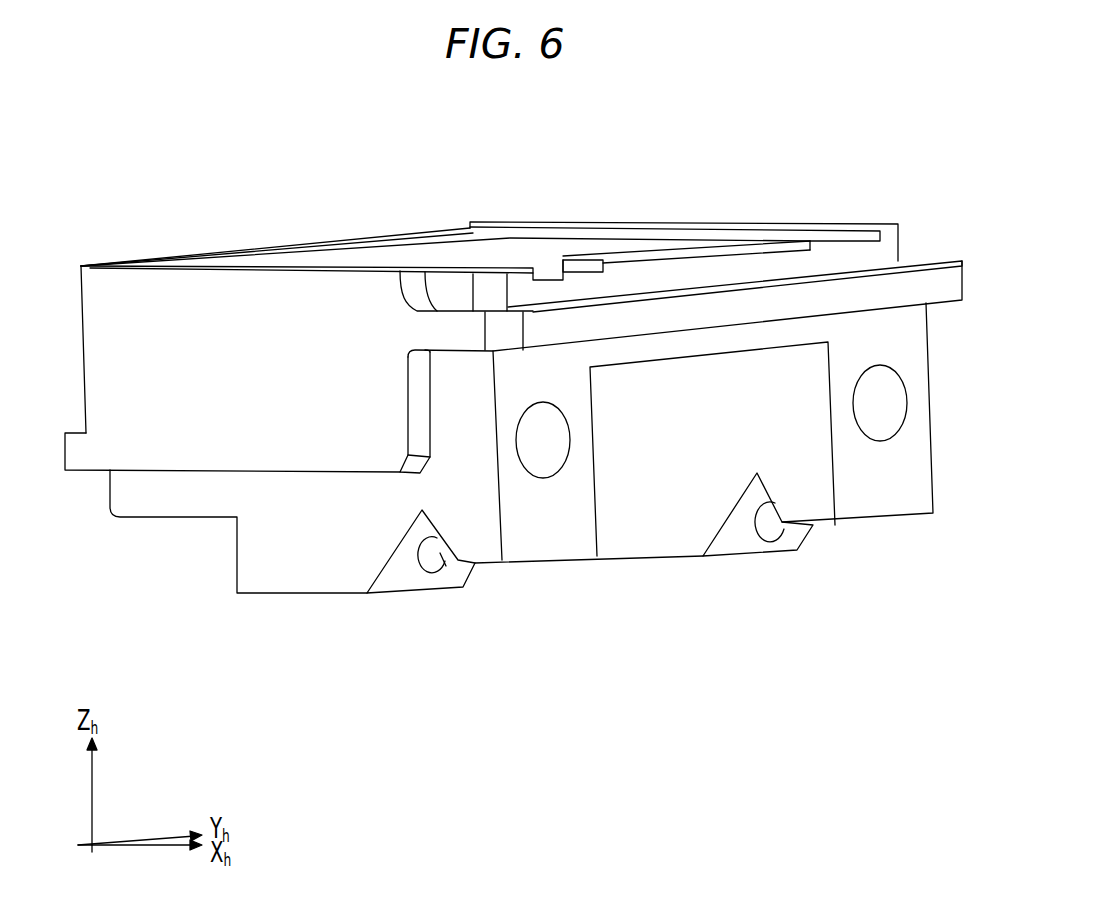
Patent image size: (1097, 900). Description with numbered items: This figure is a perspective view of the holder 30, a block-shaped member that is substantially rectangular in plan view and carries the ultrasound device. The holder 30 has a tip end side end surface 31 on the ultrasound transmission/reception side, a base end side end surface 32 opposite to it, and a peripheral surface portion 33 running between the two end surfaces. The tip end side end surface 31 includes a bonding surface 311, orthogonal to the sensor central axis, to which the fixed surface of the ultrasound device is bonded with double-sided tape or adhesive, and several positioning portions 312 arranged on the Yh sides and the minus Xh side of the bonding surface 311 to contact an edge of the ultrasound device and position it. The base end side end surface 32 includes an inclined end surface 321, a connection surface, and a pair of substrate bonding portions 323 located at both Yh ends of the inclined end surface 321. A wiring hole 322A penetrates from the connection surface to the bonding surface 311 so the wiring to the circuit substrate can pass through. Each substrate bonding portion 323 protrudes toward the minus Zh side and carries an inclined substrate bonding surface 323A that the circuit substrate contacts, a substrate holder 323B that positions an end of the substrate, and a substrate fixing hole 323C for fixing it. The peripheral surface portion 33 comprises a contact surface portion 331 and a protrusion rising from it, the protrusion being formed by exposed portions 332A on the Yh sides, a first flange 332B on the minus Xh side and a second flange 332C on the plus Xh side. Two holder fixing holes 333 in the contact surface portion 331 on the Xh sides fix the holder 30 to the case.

The holder 30 is at (81, 263).
The tip end side end surface 31 is at (697, 196).
The bonding surface 311 is at (527, 248).
The positioning portions 312 is at (665, 250).
The base end side end surface 32 is at (550, 582).
The inclined end surface 321 is at (658, 398).
The wiring hole 322A is at (395, 247).
The substrate bonding portion 323 is at (822, 500).
The substrate bonding surface 323A is at (403, 573).
The substrate holder 323B is at (417, 540).
The substrate fixing hole 323C is at (440, 553).
The peripheral surface portion 33 is at (188, 494).
The contact surface portion 331 is at (263, 562).
The exposed portions 332A is at (233, 297).
The first flange 332B is at (73, 448).
The second flange 332C is at (920, 297).
The holder fixing hole 333 is at (550, 443).